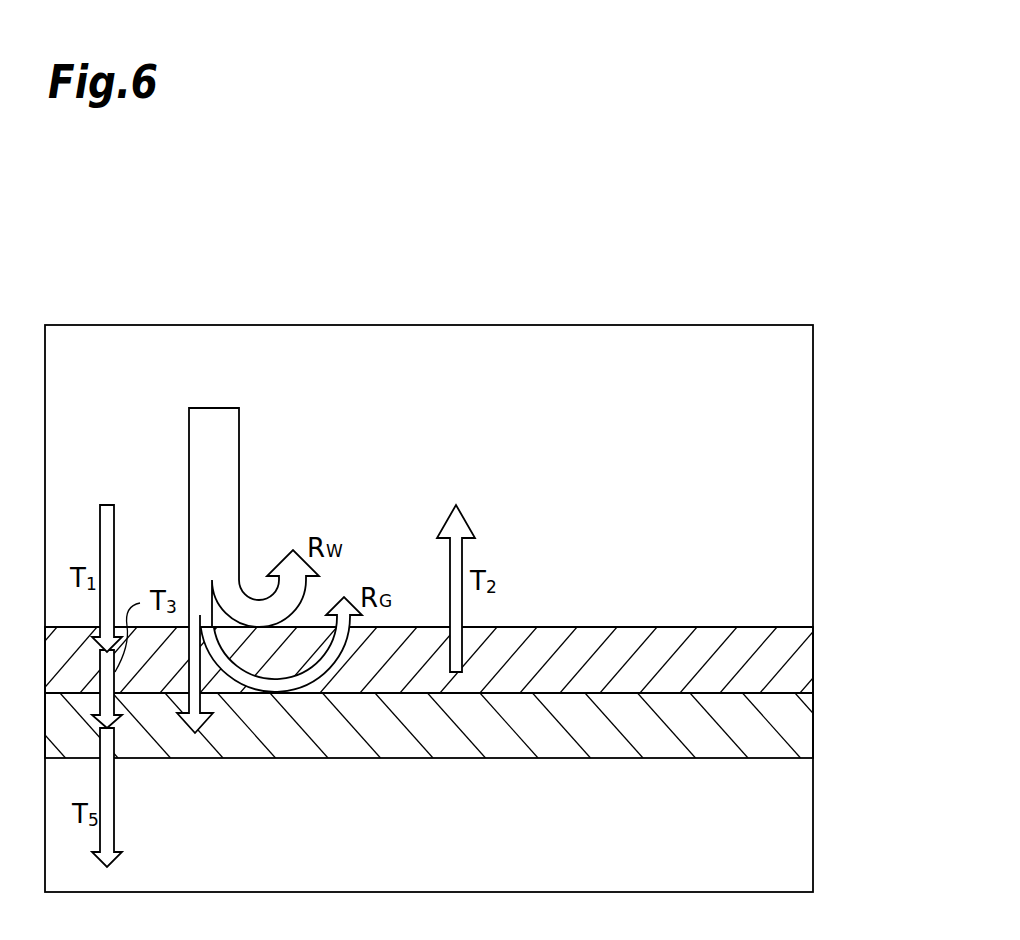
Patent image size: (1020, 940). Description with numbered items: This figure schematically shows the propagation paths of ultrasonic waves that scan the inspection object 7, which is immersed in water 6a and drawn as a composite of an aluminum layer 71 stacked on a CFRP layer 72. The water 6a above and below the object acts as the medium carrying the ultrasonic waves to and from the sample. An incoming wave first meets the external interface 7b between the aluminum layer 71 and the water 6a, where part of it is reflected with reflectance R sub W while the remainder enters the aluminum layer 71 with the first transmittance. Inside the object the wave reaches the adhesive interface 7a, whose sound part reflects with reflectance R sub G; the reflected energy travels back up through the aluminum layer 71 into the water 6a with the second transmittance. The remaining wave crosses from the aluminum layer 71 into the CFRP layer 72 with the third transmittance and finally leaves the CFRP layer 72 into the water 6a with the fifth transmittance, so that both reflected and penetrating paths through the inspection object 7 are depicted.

The water 6a is at (773, 325).
The inspection object 7 is at (900, 675).
The adhesive interface 7a is at (792, 690).
The external interface 7b is at (792, 625).
The aluminum layer 71 is at (792, 650).
The CFRP layer 72 is at (792, 730).